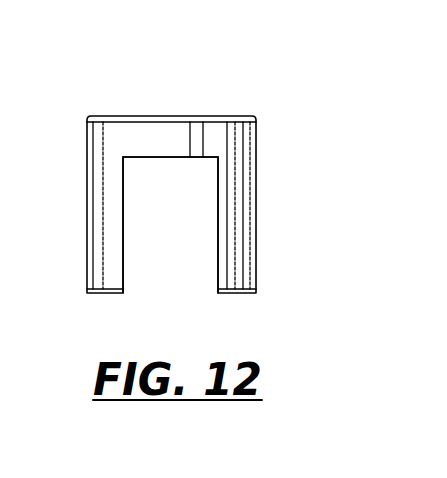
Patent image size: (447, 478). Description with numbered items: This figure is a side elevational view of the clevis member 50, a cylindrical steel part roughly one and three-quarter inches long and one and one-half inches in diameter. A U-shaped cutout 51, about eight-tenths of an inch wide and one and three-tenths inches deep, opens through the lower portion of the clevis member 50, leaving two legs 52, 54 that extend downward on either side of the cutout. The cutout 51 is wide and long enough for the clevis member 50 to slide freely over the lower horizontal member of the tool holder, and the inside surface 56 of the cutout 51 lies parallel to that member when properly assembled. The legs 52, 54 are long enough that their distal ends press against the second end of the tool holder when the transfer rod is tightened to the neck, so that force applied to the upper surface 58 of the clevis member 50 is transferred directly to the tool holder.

The clevis member 50 is at (258, 84).
The U-shaped cutout 51 is at (168, 227).
The leg 52 is at (108, 220).
The leg 54 is at (237, 222).
The inside surface 56 is at (167, 158).
The upper surface 58 is at (160, 118).